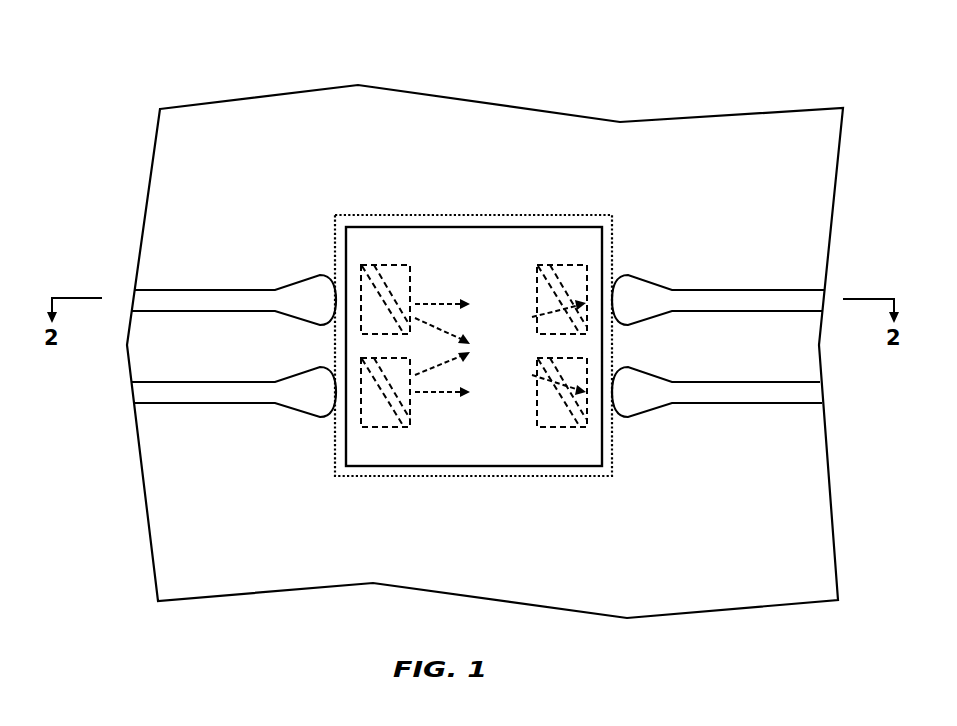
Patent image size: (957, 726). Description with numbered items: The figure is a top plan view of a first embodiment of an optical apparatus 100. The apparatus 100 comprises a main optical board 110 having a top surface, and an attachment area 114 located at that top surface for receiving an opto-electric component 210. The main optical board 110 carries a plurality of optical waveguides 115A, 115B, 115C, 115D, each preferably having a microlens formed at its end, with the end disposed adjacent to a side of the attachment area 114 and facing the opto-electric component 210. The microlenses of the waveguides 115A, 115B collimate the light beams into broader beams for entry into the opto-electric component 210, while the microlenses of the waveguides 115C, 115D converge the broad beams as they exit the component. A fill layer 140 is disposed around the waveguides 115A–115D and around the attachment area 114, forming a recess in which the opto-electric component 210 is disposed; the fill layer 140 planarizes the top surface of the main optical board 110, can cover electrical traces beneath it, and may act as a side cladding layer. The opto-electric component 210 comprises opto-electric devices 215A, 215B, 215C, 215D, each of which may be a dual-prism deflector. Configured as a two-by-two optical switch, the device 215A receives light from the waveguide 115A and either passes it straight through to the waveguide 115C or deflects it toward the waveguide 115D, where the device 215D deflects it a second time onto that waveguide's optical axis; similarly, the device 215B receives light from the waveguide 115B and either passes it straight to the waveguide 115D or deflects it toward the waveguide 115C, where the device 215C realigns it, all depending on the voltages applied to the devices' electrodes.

The optical apparatus 100 is at (118, 94).
The main optical board 110 is at (198, 103).
The attachment area 114 is at (335, 215).
The fill layer 140 is at (180, 172).
The opto-electric component 210 is at (407, 228).
The optical waveguide 115A is at (262, 290).
The optical waveguide 115B is at (262, 382).
The optical waveguide 115C is at (772, 290).
The optical waveguide 115D is at (772, 382).
The opto-electric device 215A is at (383, 265).
The opto-electric device 215B is at (383, 427).
The opto-electric device 215C is at (568, 265).
The opto-electric device 215D is at (568, 427).